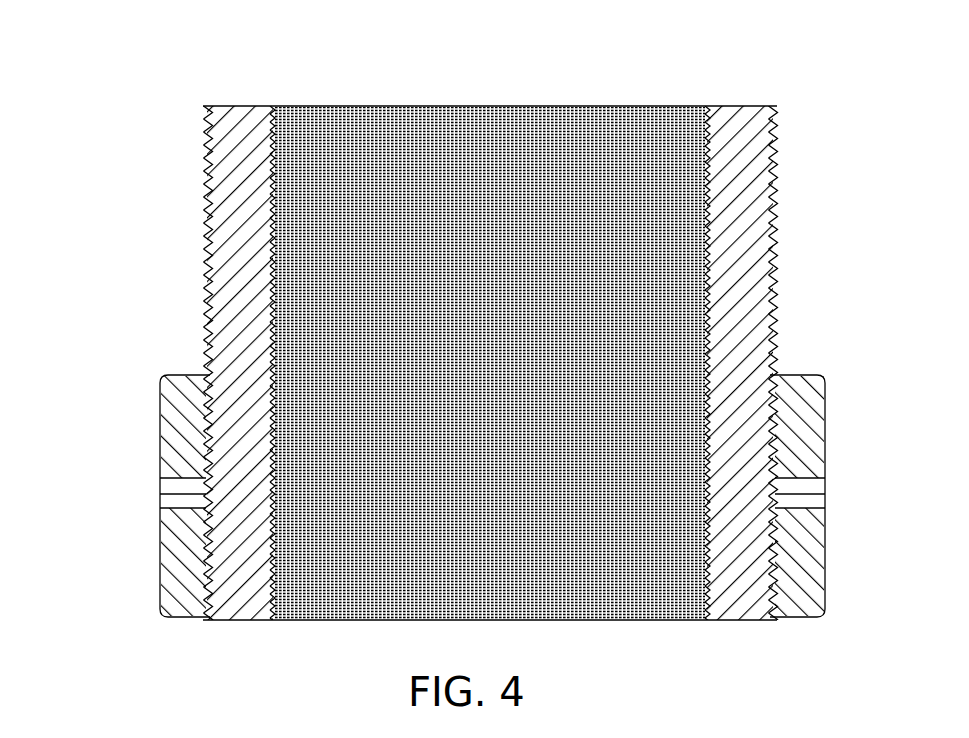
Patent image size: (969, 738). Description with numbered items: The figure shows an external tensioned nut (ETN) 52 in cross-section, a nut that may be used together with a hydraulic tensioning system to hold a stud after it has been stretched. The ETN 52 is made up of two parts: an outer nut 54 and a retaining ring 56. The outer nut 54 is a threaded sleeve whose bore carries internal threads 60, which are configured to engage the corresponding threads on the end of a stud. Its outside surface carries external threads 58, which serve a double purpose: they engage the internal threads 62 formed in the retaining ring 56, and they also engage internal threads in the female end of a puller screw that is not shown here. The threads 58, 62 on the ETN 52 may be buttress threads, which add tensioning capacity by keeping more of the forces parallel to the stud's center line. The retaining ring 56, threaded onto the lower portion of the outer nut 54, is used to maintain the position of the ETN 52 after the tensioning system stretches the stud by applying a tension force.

The external tensioned nut 52 is at (100, 86).
The outer nut 54 is at (746, 106).
The retaining ring 56 is at (826, 447).
The external threads 58 is at (208, 148).
The internal threads 60 is at (704, 598).
The internal threads 62 is at (770, 403).